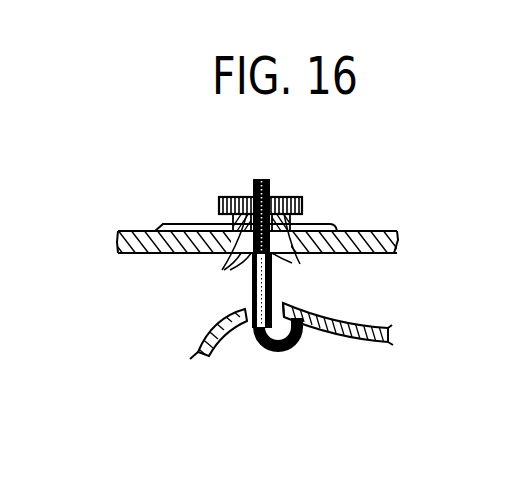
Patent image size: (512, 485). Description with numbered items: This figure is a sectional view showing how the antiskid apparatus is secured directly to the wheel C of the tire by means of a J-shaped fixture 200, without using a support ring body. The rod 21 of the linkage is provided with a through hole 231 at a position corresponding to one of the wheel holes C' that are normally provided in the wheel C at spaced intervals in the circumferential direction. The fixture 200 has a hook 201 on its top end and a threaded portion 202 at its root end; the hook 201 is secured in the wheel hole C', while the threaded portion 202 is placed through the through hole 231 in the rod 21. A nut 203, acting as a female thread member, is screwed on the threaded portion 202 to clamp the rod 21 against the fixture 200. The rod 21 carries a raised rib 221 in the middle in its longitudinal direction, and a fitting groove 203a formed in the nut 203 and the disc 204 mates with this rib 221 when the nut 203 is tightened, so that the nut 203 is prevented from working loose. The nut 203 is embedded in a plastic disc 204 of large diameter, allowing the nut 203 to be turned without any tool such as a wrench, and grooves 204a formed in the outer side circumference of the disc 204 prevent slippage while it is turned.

The rod 21 is at (384, 231).
The raised rib 221 is at (327, 224).
The through hole 231 is at (276, 257).
The threaded portion 202 is at (262, 179).
The nut 203 is at (276, 212).
The fitting groove 203a is at (232, 264).
The disc 204 is at (245, 197).
The groove 204a is at (218, 207).
The fixture 200 is at (250, 297).
The hook 201 is at (302, 348).
The wheel C is at (338, 344).
The wheel hole C' is at (304, 295).